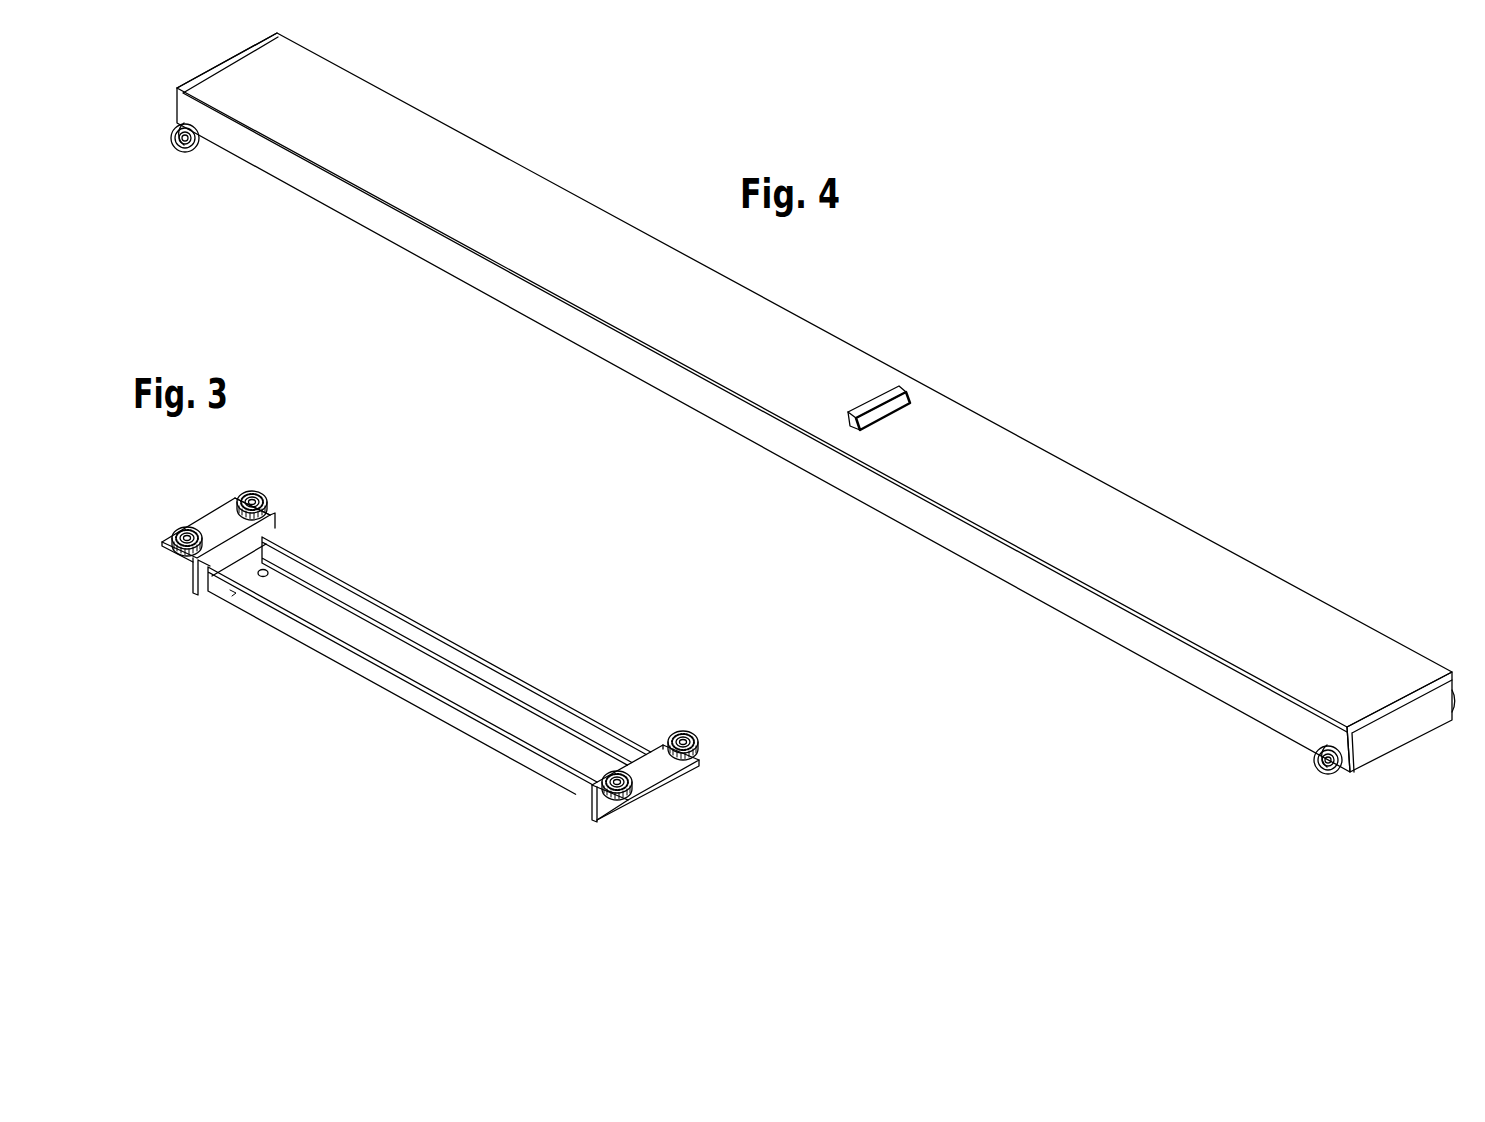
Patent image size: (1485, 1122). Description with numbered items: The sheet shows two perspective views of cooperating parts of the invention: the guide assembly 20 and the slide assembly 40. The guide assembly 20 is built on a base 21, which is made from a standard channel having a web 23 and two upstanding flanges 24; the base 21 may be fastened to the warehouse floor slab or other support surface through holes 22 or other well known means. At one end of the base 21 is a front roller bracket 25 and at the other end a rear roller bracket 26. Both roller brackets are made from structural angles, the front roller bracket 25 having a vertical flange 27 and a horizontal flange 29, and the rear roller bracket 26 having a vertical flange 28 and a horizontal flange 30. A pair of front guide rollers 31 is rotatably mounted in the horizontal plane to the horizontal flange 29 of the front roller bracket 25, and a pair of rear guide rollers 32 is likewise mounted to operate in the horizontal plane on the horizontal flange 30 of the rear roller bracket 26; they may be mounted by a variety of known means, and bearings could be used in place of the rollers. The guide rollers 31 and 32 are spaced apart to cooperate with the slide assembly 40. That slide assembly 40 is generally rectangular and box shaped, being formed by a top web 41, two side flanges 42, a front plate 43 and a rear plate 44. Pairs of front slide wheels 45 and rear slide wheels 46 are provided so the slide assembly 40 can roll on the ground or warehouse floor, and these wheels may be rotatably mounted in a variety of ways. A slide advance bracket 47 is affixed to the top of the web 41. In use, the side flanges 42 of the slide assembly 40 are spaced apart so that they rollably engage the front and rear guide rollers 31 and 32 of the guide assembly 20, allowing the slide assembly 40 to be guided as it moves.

In FIG. 3, the guide assembly 20 is at (434, 662).
In FIG. 3, the base 21 is at (429, 657).
In FIG. 3, the holes 22 is at (270, 572).
In FIG. 3, the web 23 is at (377, 638).
In FIG. 3, the upstanding flanges 24 is at (527, 688).
In FIG. 3, the front roller bracket 25 is at (647, 808).
In FIG. 3, the rear roller bracket 26 is at (224, 543).
In FIG. 3, the vertical flange 27 is at (606, 806).
In FIG. 3, the vertical flange 28 is at (190, 590).
In FIG. 3, the horizontal flange 29 is at (636, 792).
In FIG. 3, the horizontal flange 30 is at (278, 518).
In FIG. 3, the front guide rollers 31 is at (700, 740).
In FIG. 3, the rear guide rollers 32 is at (249, 488).
In FIG. 4, the slide assembly 40 is at (804, 425).
In FIG. 4, the top web 41 is at (648, 258).
In FIG. 4, the side flanges 42 is at (741, 429).
In FIG. 4, the front plate 43 is at (1393, 736).
In FIG. 4, the rear plate 44 is at (226, 62).
In FIG. 4, the front slide wheels 45 is at (1318, 772).
In FIG. 4, the rear slide wheels 46 is at (188, 152).
In FIG. 4, the slide advance bracket 47 is at (870, 406).